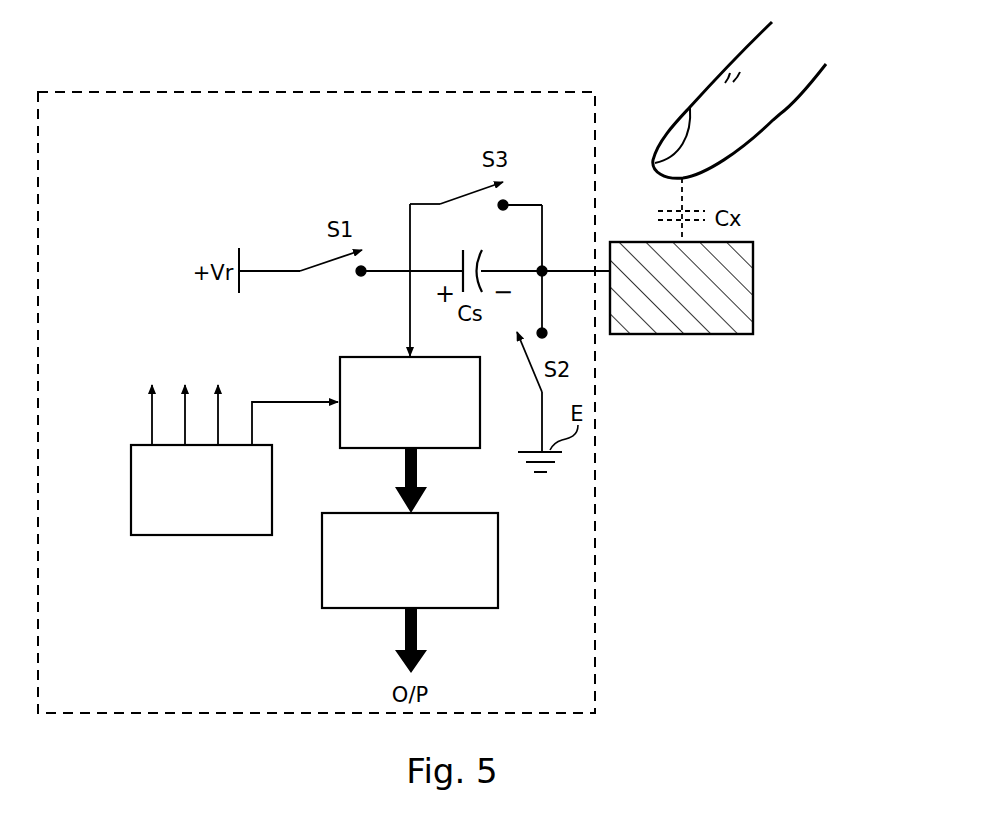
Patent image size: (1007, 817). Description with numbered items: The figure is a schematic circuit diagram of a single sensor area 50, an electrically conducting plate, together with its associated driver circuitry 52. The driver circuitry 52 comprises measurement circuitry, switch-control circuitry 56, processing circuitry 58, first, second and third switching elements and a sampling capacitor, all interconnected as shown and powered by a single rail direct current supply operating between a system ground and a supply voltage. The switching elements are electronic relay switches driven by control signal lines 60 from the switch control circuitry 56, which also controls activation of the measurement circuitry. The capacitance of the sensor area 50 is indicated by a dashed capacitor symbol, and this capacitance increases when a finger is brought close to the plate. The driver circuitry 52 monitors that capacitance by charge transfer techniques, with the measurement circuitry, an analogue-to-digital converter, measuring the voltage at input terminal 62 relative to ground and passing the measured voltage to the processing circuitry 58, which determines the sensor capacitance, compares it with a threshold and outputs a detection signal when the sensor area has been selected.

The sensor area 50 is at (753, 280).
The driver circuitry 52 is at (596, 585).
The switch-control circuitry 56 is at (178, 537).
The processing circuitry 58 is at (347, 611).
The control signal lines 60 is at (134, 427).
The input terminal 62 is at (408, 351).